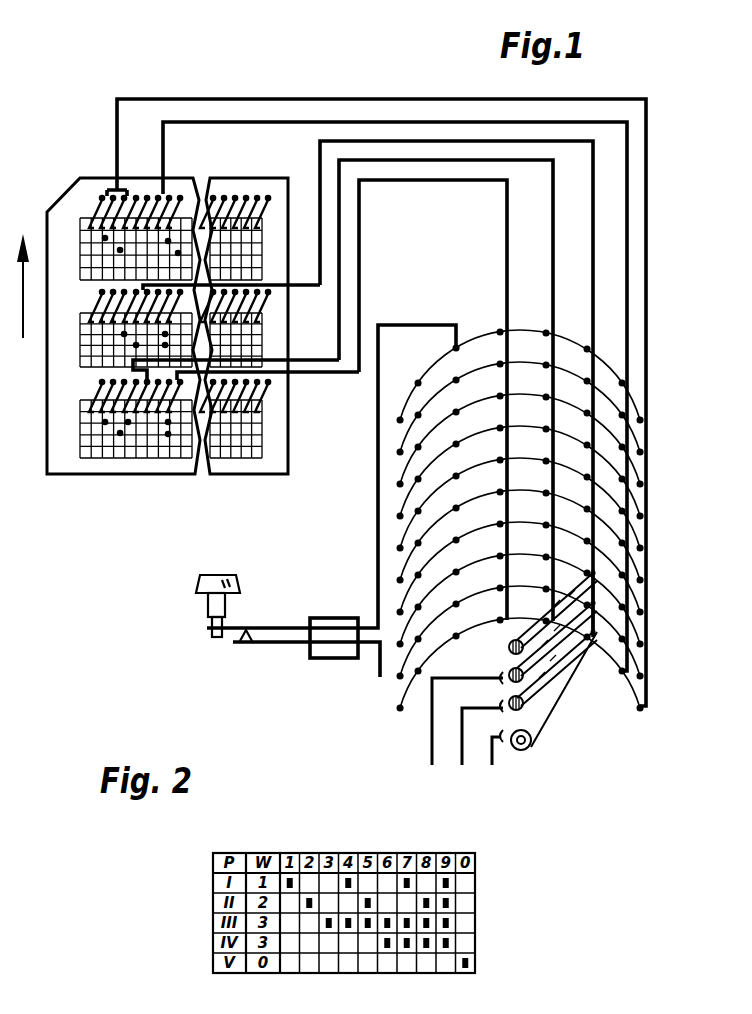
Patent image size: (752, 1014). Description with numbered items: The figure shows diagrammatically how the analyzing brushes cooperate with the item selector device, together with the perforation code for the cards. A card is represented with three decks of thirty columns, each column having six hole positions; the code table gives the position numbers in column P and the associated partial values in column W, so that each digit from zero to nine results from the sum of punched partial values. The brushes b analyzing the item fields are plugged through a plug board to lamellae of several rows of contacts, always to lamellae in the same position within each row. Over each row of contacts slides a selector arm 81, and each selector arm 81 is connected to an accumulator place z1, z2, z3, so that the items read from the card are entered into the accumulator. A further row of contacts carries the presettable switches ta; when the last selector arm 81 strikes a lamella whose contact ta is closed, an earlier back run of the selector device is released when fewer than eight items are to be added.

The brushes b is at (97, 208).
The presettable switch ta is at (246, 631).
The selector arm 81 is at (542, 690).
The accumulator place z1 is at (498, 760).
The accumulator place z2 is at (478, 745).
The accumulator place z3 is at (461, 731).